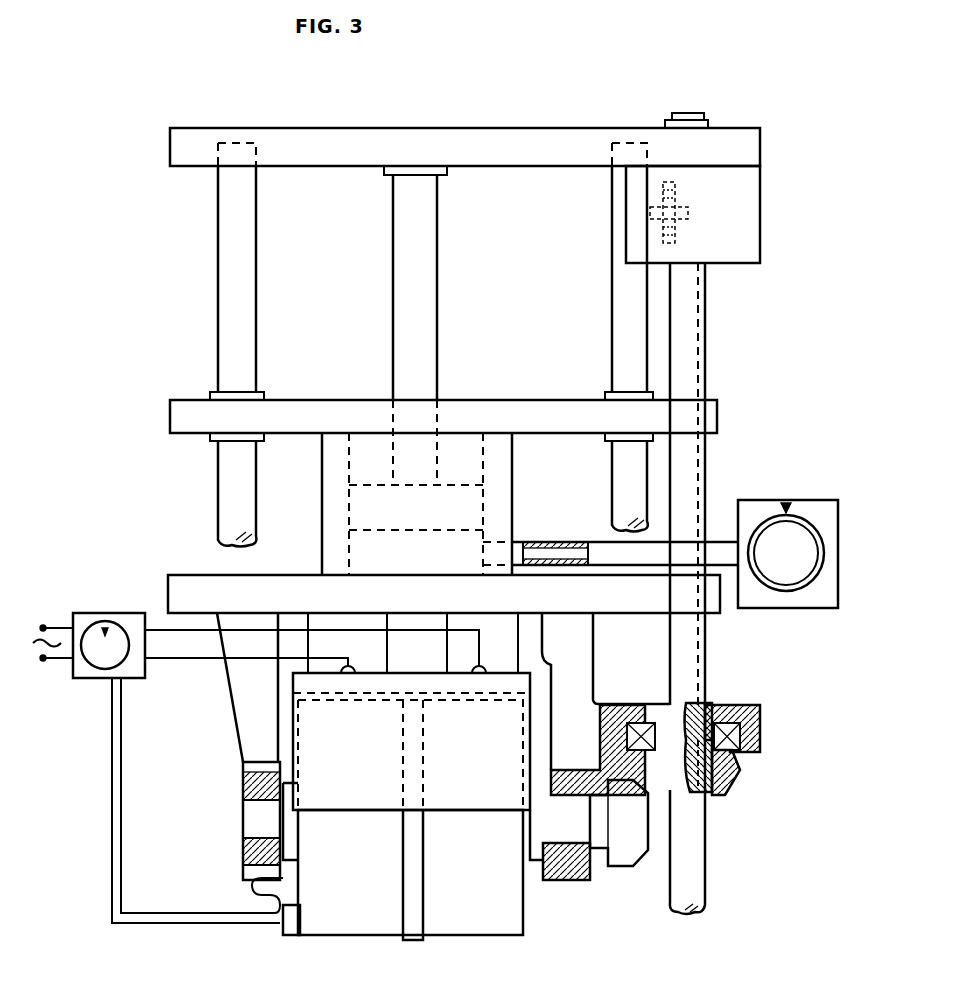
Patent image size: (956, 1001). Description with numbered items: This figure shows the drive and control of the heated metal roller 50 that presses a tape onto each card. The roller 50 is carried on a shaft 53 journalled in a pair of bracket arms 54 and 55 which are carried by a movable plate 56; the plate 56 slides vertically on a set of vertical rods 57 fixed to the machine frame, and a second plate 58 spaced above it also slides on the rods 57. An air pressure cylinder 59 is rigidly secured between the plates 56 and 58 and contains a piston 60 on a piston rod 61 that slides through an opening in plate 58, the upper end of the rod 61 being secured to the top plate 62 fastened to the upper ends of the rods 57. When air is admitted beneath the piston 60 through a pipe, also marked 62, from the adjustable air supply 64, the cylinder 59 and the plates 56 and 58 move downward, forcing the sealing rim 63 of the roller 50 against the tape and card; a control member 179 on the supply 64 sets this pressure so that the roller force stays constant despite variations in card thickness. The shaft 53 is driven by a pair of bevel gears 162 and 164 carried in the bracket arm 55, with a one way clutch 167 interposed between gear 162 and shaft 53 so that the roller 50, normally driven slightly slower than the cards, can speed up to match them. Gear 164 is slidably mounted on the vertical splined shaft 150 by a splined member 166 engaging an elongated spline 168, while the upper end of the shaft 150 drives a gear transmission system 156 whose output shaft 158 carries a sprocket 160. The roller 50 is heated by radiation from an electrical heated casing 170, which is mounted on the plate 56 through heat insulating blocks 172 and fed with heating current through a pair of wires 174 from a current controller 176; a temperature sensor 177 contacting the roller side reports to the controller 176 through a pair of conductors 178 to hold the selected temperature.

The heated metal roller 50 is at (410, 872).
The shaft 53 is at (250, 822).
The bracket arm 54 is at (247, 729).
The bracket arm 55 is at (578, 665).
The movable plate 56 is at (218, 583).
The vertical rods 57 is at (232, 490).
The second plate 58 is at (478, 410).
The air pressure cylinder 59 is at (322, 490).
The piston 60 is at (438, 534).
The piston rod 61 is at (428, 284).
The top plate / air pressure pipe 62 is at (462, 138).
The sealing rim 63 is at (412, 942).
The adjustable air supply 64 is at (755, 497).
The splined shaft 150 is at (700, 882).
The gear transmission system 156 is at (762, 226).
The output shaft 158 is at (683, 210).
The sprocket 160 is at (675, 226).
The bevel gear 162 is at (638, 866).
The bevel gear 164 is at (735, 784).
The splined member 166 is at (708, 805).
The one way clutch 167 is at (598, 848).
The elongated spline 168 is at (706, 640).
The electrical heated casing 170 is at (411, 741).
The heat insulating blocks 172 is at (413, 643).
The wires 174 is at (205, 658).
The current controller 176 is at (133, 620).
The temperature sensor 177 is at (290, 937).
The conductors 178 is at (112, 800).
The control member 179 is at (802, 560).